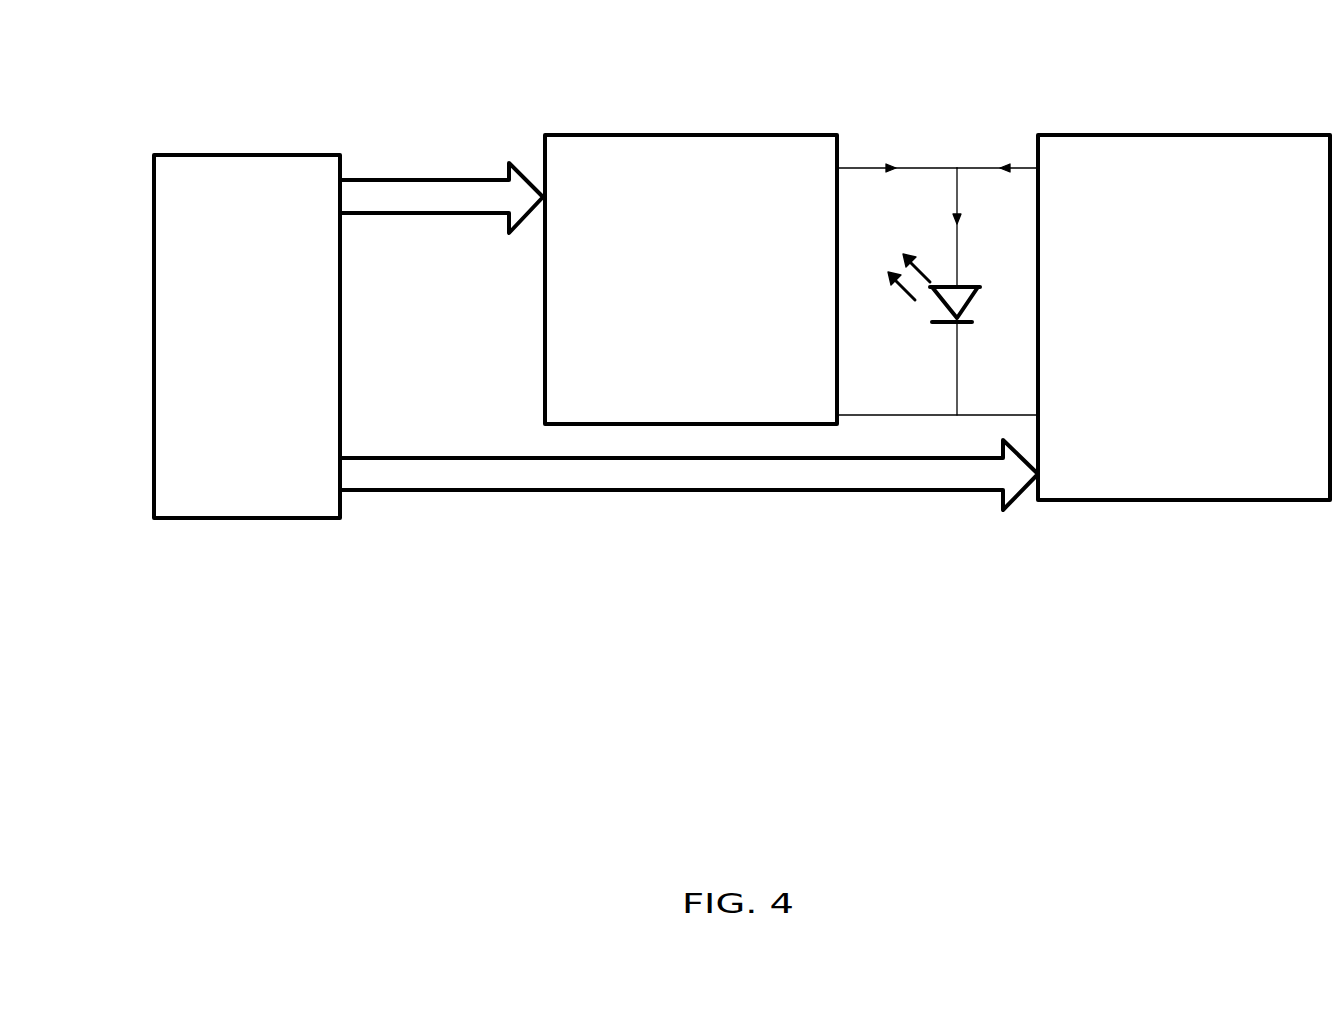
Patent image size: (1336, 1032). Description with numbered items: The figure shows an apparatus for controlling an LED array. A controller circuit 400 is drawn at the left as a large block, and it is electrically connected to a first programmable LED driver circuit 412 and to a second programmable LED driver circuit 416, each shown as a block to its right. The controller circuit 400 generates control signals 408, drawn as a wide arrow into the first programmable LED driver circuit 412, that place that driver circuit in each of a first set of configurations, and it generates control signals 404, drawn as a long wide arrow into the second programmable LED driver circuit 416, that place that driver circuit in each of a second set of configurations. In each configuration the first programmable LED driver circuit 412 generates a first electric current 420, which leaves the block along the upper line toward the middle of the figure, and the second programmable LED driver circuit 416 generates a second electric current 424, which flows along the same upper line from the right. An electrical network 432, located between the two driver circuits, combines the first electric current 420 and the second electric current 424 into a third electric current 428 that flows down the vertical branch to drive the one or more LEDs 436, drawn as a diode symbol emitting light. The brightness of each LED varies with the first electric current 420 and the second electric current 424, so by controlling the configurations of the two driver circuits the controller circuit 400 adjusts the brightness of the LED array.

The controller circuit 400 is at (229, 336).
The control signals 404 is at (495, 457).
The control signals 408 is at (460, 178).
The first programmable LED driver circuit 412 is at (682, 284).
The second programmable LED driver circuit 416 is at (1167, 311).
The first electric current 420 is at (898, 166).
The second electric current 424 is at (988, 166).
The third electric current 428 is at (962, 230).
The electrical network 432 is at (938, 88).
The LEDs 436 is at (940, 327).